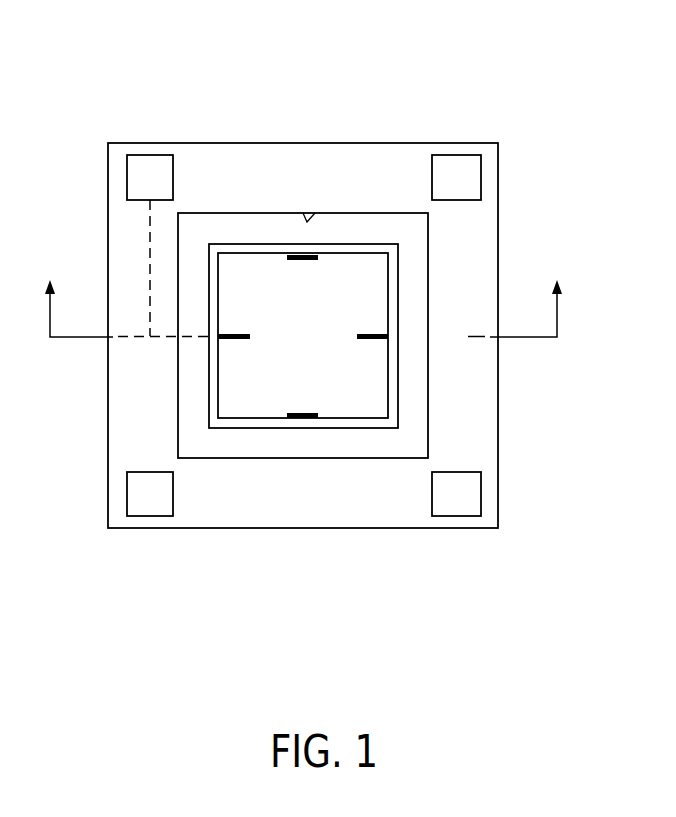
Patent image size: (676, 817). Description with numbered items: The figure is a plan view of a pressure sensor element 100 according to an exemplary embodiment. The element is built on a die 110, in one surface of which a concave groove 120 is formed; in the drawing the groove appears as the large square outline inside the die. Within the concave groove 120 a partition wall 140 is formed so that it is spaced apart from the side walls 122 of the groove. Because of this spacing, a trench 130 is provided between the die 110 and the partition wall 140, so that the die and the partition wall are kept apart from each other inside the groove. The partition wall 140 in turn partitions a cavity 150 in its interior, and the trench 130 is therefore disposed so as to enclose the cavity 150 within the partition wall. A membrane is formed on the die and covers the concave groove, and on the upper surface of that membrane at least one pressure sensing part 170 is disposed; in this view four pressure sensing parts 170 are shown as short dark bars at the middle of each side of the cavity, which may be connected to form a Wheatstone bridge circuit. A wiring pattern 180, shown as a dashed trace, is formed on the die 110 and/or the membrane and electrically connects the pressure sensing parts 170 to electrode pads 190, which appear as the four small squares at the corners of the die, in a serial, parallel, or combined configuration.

The pressure sensor element 100 is at (137, 46).
The die 110 is at (375, 143).
The concave groove 120 is at (257, 201).
The side walls 122 is at (313, 212).
The trench 130 is at (418, 237).
The partition wall 140 is at (398, 380).
The cavity 150 is at (358, 405).
The pressure sensing part 170 is at (308, 420).
The wiring pattern 180 is at (150, 230).
The electrode pads 190 is at (130, 173).